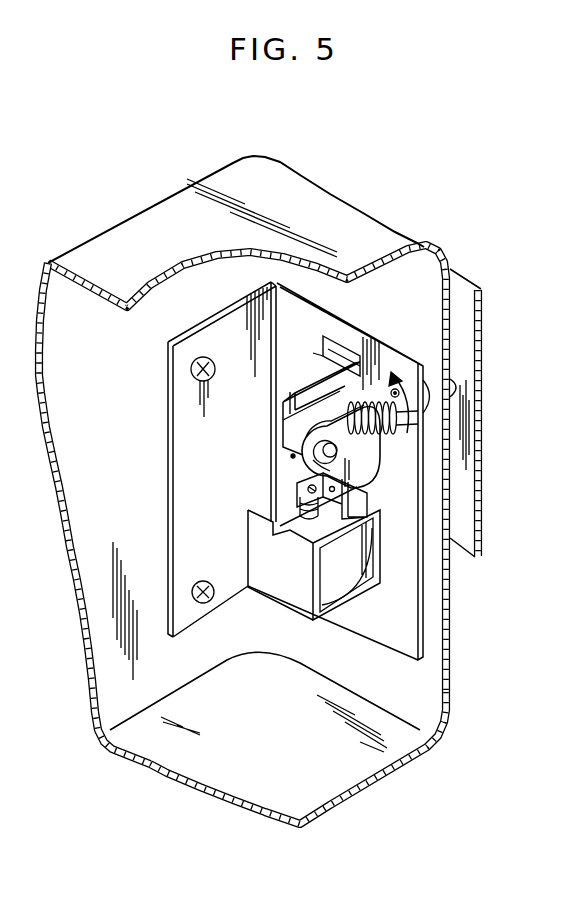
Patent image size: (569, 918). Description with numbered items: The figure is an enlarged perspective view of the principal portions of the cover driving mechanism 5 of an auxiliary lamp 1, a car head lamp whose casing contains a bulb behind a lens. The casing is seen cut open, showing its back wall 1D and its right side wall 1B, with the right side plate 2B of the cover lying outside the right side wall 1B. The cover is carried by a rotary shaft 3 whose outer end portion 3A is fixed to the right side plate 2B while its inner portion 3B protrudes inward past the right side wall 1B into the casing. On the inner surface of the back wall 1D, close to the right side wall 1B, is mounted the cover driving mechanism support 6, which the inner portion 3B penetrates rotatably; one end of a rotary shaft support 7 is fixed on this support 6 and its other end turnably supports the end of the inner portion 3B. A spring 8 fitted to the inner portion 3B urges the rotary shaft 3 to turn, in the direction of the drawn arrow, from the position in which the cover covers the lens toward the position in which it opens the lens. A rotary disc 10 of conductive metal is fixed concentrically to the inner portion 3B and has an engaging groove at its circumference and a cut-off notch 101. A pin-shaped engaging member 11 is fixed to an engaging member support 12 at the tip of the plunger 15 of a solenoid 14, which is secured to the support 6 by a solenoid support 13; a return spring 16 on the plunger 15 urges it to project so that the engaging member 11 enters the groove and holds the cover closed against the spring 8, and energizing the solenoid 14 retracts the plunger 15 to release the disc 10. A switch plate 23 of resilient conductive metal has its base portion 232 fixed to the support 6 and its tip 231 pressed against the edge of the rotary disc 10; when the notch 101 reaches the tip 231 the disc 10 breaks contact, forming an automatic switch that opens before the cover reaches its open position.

The auxiliary lamp 1 is at (453, 683).
The right side wall 1B is at (433, 533).
The back wall 1D is at (110, 360).
The right side plate 2B is at (463, 320).
The rotary shaft 3 is at (382, 397).
The outer end portion 3A is at (457, 387).
The inner portion 3B is at (313, 460).
The cover driving mechanism 5 is at (252, 637).
The cover driving mechanism support 6 is at (183, 432).
The rotary shaft support 7 is at (290, 428).
The spring 8 is at (390, 437).
The rotary disc 10 is at (370, 466).
The engaging member 11 is at (332, 492).
The engaging member support 12 is at (340, 500).
The solenoid support 13 is at (302, 607).
The solenoid 14 is at (348, 578).
The plunger 15 is at (293, 508).
The return spring 16 is at (313, 517).
The switch plate 23 is at (307, 393).
The notch 101 is at (314, 449).
The tip 231 is at (293, 456).
The base portion 232 is at (336, 350).